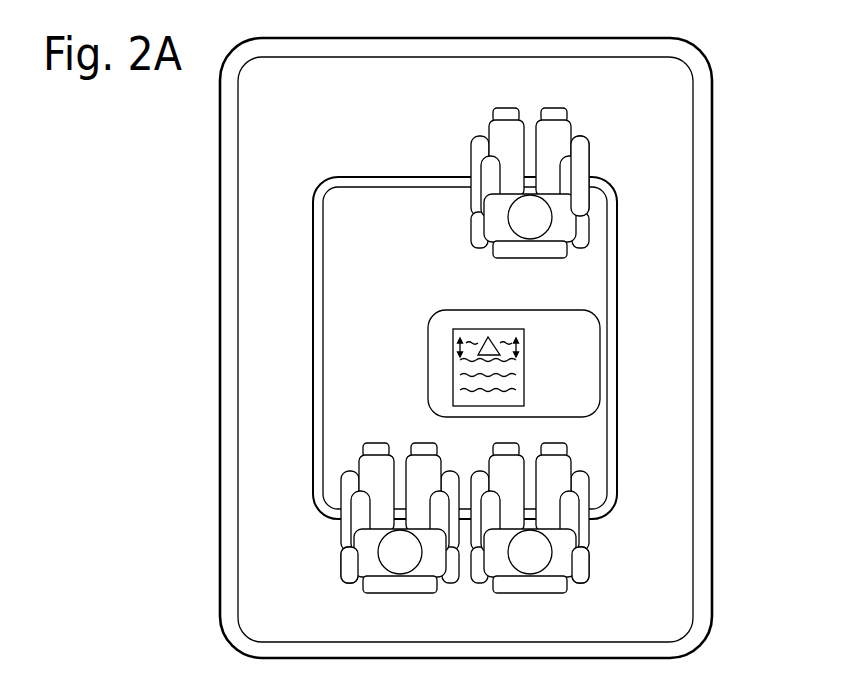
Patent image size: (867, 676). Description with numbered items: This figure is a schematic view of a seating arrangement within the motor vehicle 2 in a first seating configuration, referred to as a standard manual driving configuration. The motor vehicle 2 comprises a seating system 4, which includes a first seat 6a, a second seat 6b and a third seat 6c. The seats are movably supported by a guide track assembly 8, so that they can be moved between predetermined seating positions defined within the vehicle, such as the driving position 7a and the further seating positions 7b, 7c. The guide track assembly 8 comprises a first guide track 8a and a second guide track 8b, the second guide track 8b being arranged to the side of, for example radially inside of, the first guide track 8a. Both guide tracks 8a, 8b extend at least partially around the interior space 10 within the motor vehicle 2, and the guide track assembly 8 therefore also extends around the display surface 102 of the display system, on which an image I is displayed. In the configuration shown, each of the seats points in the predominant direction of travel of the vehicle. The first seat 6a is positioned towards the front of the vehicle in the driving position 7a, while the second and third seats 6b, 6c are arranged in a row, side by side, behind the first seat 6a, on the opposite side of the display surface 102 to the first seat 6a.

The motor vehicle 2 is at (505, 333).
The seating system 4 is at (665, 215).
The first seat 6a is at (513, 178).
The second seat 6b is at (313, 518).
The third seat 6c is at (617, 518).
The driving position 7a is at (590, 148).
The predetermined seating position 7b is at (348, 568).
The predetermined seating position 7c is at (590, 558).
The guide track assembly 8 is at (455, 348).
The first guide track 8a is at (322, 300).
The second guide track 8b is at (312, 226).
The interior space 10 is at (395, 352).
The display surface 102 is at (506, 329).
The image I is at (515, 367).